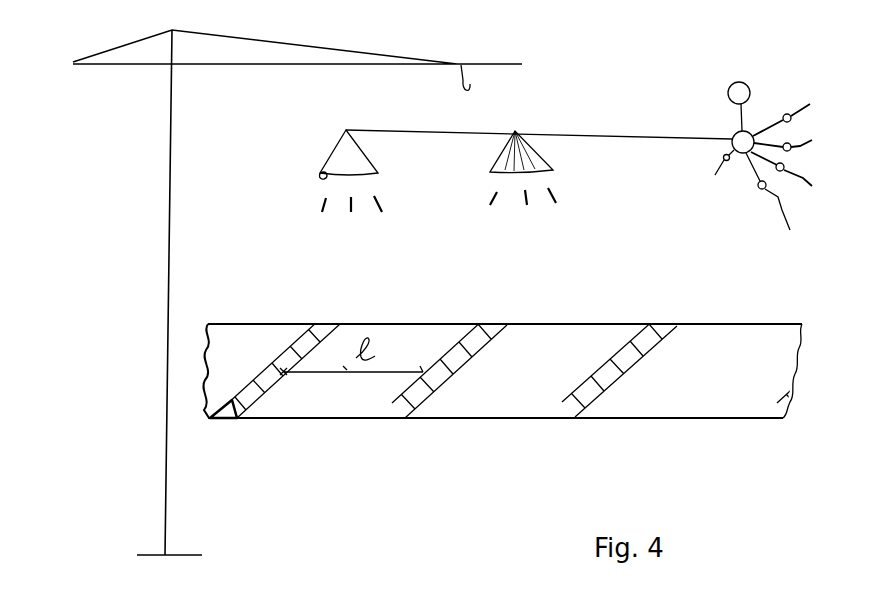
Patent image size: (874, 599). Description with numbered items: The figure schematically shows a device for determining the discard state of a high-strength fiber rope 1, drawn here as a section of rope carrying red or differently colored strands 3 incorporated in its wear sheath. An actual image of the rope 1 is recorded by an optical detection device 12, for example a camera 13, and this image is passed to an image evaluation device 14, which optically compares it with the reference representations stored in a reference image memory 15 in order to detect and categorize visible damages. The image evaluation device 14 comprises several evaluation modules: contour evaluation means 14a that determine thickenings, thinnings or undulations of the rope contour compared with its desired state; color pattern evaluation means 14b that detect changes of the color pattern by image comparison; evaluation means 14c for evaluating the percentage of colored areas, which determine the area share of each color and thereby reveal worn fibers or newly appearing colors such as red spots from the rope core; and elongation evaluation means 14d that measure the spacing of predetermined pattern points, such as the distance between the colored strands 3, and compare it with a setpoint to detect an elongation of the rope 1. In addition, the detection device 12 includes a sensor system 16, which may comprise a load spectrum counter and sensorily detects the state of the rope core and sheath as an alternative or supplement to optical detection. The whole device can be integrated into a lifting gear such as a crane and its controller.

The high-strength fiber rope 1 is at (536, 333).
The colored strands 3 is at (440, 392).
The optical detection device 12 is at (308, 153).
The camera 13 is at (321, 178).
The image evaluation device 14 is at (726, 171).
The contour evaluation means 14a is at (811, 112).
The color pattern evaluation means 14b is at (813, 144).
The evaluation means for evaluating the percentage of colored areas 14c is at (810, 179).
The elongation evaluation means 14d is at (798, 201).
The reference image memory 15 is at (754, 84).
The sensor system 16 is at (567, 155).